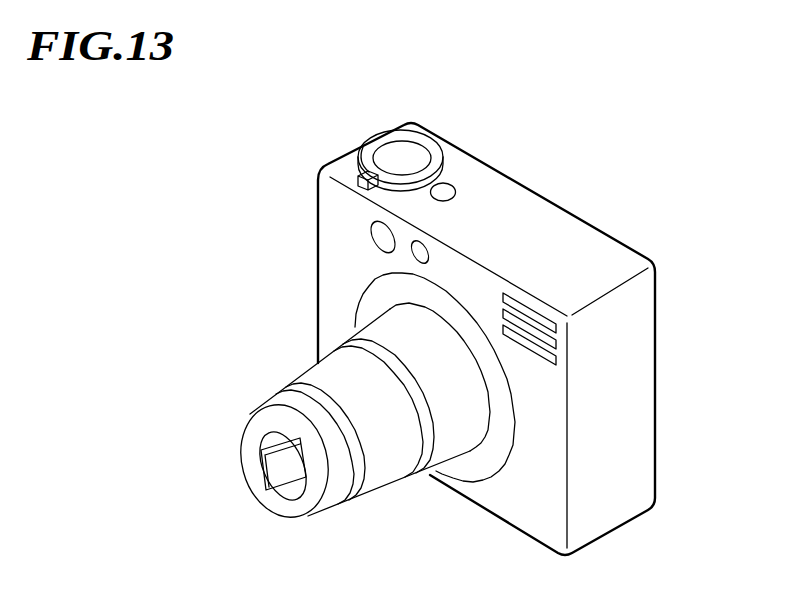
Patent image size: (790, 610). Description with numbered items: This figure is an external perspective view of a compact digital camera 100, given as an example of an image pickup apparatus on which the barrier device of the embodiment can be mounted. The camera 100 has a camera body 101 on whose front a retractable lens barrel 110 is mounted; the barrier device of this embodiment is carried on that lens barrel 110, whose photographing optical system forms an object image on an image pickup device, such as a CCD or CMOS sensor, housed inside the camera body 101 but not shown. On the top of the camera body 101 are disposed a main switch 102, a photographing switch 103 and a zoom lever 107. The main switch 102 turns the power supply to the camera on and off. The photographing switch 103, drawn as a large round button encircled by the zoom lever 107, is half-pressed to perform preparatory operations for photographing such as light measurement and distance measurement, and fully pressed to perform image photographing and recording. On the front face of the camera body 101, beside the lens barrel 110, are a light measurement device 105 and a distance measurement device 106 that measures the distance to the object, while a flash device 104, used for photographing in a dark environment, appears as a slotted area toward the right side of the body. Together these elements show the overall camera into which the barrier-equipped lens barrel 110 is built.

The compact digital camera 100 is at (569, 152).
The camera body 101 is at (597, 257).
The main switch 102 is at (441, 192).
The photographing switch 103 is at (397, 157).
The flash device 104 is at (560, 347).
The light measurement device 105 is at (380, 238).
The distance measurement device 106 is at (417, 250).
The zoom lever 107 is at (366, 172).
The lens barrel 110 is at (282, 462).